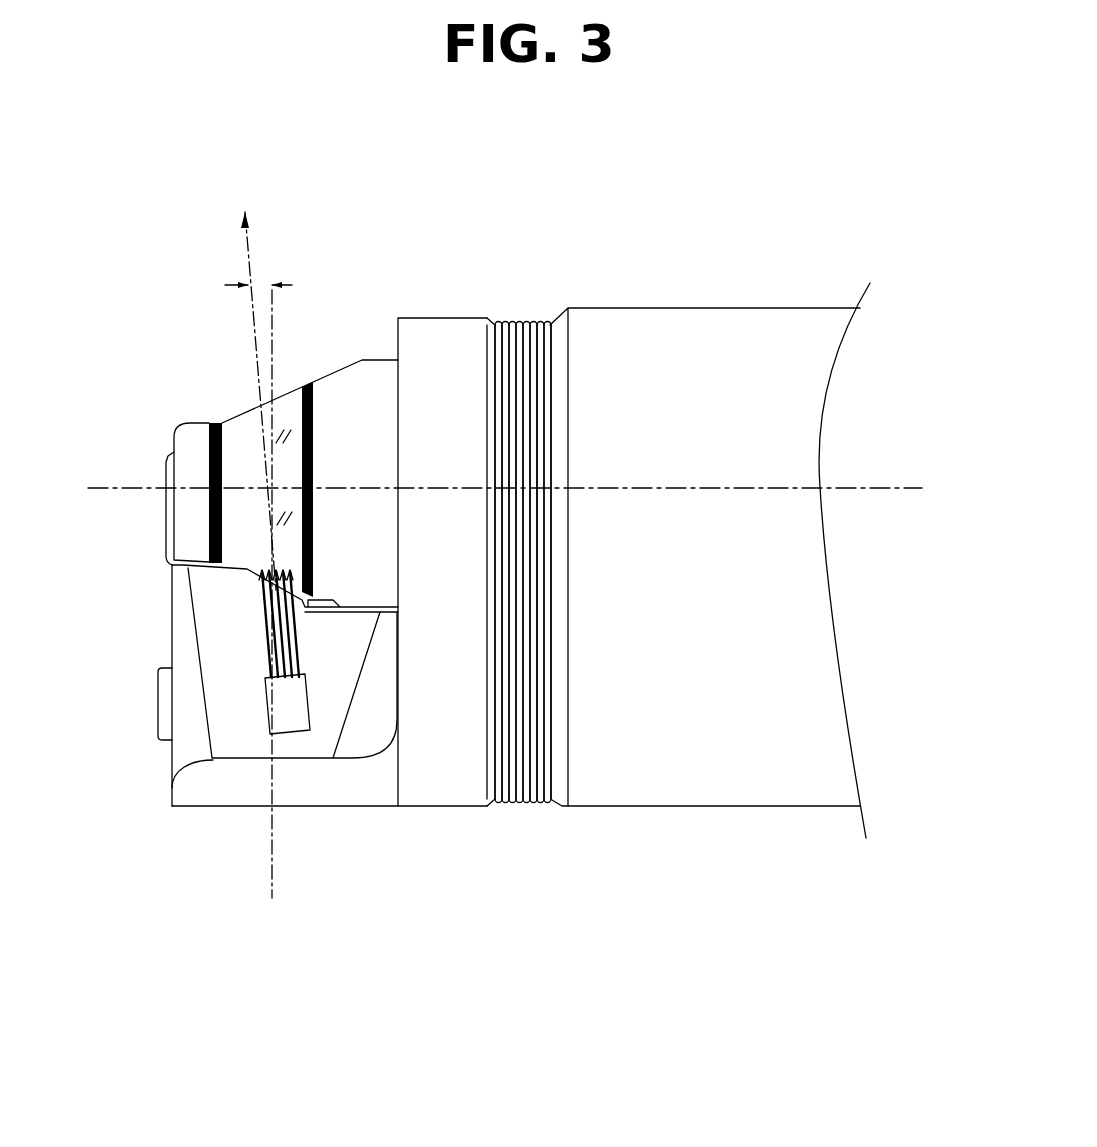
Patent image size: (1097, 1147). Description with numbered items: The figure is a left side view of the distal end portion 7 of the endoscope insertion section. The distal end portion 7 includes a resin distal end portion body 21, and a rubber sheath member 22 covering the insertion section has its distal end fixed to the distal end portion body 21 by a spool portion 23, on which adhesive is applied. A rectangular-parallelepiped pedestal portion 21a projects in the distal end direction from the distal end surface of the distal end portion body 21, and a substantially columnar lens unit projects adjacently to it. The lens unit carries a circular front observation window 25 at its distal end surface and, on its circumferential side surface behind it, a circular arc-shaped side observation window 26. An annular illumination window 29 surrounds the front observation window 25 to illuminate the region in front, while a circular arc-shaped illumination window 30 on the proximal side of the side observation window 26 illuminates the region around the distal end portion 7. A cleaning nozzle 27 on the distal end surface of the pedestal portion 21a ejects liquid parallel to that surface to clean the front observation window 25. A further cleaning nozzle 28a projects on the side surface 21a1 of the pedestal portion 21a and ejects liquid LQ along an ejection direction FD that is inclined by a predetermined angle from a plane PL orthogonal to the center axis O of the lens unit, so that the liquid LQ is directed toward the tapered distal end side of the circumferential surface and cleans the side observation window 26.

The distal end portion 7 is at (505, 865).
The distal end portion body 21 is at (440, 330).
The pedestal portion 21a is at (173, 806).
The side surface 21a1 is at (222, 735).
The sheath member 22 is at (678, 327).
The spool portion 23 is at (553, 310).
The front observation window 25 is at (167, 467).
The side observation window 26 is at (252, 403).
The cleaning nozzle 27 is at (163, 712).
The cleaning nozzle 28a is at (290, 707).
The illumination window 29 is at (188, 437).
The illumination window 30 is at (375, 372).
The liquid LQ is at (262, 591).
The plane PL is at (268, 870).
The ejection direction FD is at (247, 239).
The center axis O is at (868, 488).